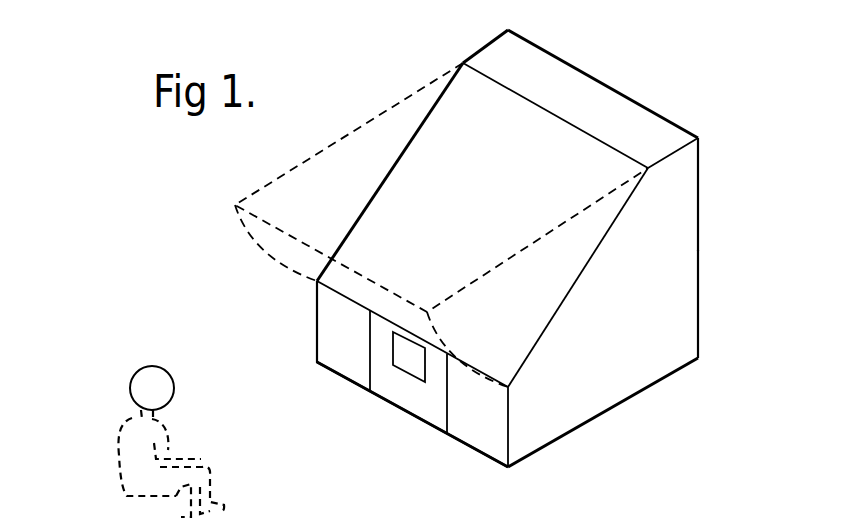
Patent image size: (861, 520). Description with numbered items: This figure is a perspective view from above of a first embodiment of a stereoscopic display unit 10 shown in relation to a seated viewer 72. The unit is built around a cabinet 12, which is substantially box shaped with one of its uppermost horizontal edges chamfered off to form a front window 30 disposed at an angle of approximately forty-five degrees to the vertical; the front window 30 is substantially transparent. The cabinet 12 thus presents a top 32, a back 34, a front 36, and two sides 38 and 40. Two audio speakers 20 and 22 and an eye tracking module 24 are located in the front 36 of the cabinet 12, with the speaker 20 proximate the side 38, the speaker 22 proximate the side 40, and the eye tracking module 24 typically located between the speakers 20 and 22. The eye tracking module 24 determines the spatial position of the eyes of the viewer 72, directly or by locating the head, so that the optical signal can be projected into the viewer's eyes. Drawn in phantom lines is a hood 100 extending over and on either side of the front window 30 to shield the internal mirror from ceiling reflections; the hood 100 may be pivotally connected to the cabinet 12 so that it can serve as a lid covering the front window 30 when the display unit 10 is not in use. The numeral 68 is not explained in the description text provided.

The stereoscopic display unit 10 is at (393, 107).
The cabinet 12 is at (704, 136).
The audio speaker 20 is at (465, 453).
The audio speaker 22 is at (306, 337).
The eye tracking module 24 is at (415, 330).
The front window 30 is at (497, 223).
The top 32 is at (555, 83).
The back 34 is at (700, 242).
The front 36 is at (347, 383).
The side 38 is at (618, 368).
The side 40 is at (313, 300).
The floor 68 is at (657, 514).
The viewer 72 is at (133, 425).
The hood 100 is at (252, 190).